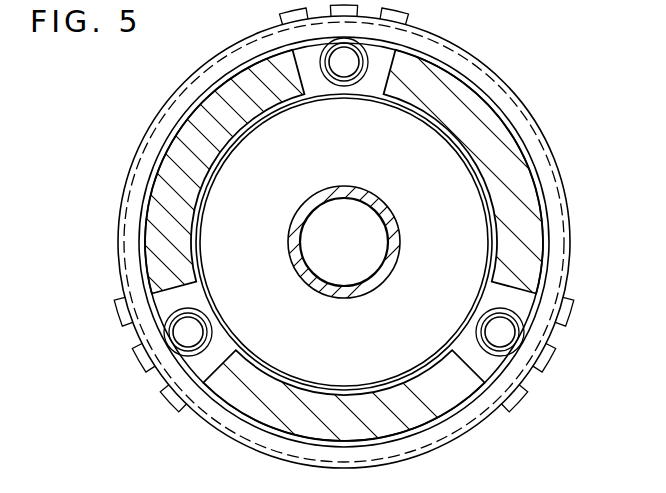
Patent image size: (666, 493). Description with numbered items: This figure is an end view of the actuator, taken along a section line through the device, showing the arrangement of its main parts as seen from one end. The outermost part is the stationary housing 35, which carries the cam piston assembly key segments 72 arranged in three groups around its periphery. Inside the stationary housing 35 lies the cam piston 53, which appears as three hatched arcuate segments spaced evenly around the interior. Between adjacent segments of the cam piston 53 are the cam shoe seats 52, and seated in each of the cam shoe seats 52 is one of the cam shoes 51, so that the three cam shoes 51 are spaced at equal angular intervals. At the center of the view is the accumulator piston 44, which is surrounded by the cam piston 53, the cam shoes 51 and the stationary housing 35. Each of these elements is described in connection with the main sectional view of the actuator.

The stationary housing 35 is at (462, 55).
The cam piston assembly key segments 72 is at (143, 357).
The cam piston 53 is at (167, 172).
The cam shoe seats 52 is at (326, 52).
The cam shoes 51 is at (350, 60).
The accumulator piston 44 is at (306, 278).